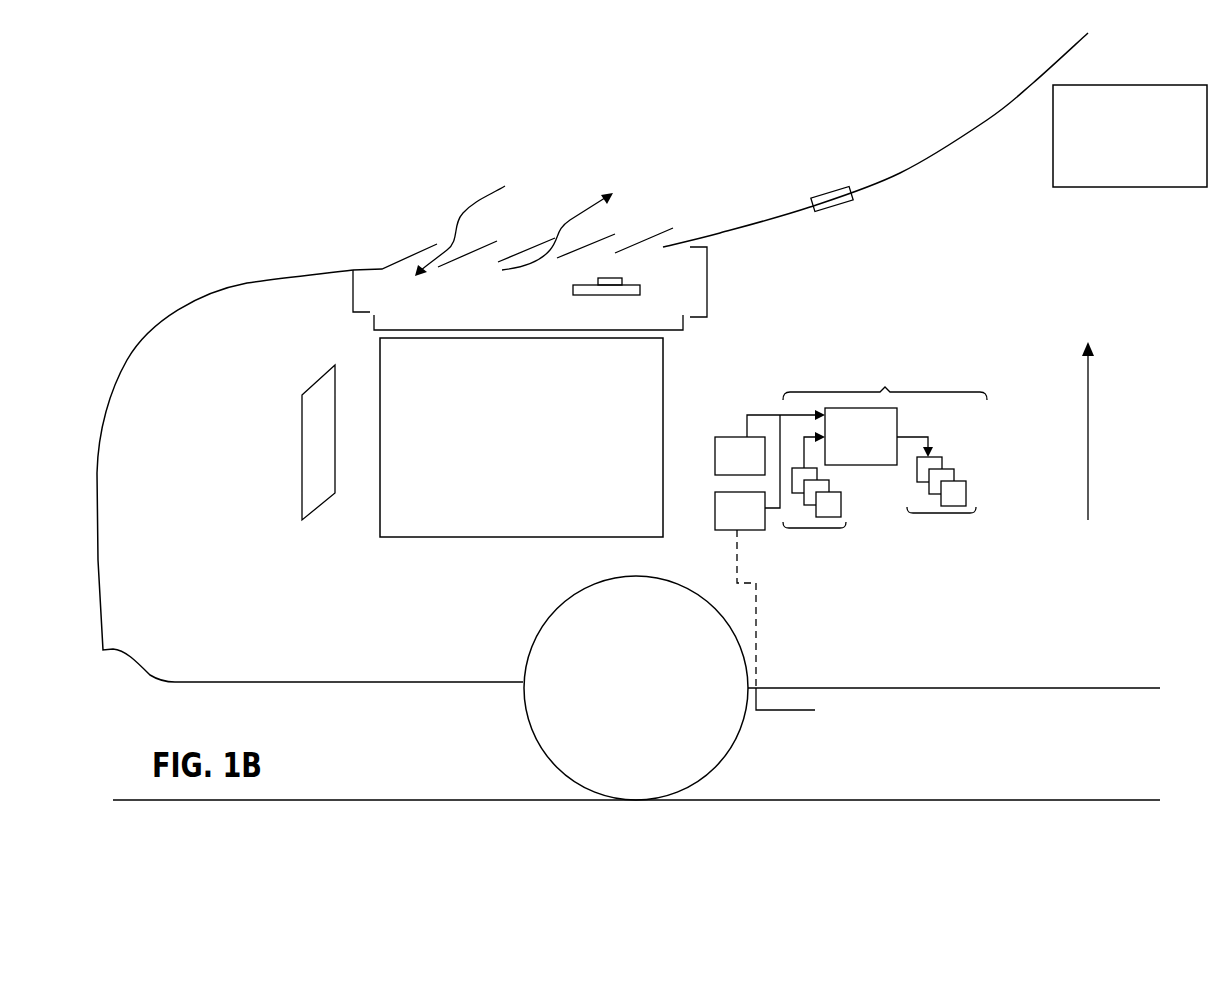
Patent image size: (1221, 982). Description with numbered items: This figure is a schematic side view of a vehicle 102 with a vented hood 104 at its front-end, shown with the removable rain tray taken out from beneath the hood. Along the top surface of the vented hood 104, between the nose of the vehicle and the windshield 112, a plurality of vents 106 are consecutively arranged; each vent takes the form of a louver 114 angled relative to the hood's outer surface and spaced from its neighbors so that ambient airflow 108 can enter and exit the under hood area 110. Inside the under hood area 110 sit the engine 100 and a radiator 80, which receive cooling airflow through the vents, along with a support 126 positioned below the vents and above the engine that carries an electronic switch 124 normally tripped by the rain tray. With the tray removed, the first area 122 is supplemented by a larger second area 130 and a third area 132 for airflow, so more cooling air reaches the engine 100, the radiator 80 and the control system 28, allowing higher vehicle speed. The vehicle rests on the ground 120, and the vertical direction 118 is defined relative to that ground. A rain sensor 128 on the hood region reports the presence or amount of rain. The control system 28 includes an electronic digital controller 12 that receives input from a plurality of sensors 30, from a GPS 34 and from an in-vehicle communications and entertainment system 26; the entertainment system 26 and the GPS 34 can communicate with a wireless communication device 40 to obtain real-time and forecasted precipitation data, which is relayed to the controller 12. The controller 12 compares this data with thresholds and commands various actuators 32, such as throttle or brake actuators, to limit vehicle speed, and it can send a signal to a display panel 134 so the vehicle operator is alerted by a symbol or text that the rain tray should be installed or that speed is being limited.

The controller 12 is at (861, 436).
The in-vehicle communications and entertainment system 26 is at (747, 472).
The control system 28 is at (886, 389).
The sensors 30 is at (817, 504).
The actuators 32 is at (943, 499).
The GPS 34 is at (770, 442).
The wireless communication device 40 is at (797, 710).
The radiator 80 is at (320, 510).
The engine 100 is at (380, 358).
The vehicle 102 is at (800, 131).
The vented hood 104 is at (370, 268).
The vents 106 is at (536, 196).
The airflow 108 is at (463, 213).
The under hood area 110 is at (205, 318).
The windshield 112 is at (987, 120).
The louver 114 is at (643, 240).
The vertical direction 118 is at (1088, 435).
The ground 120 is at (877, 800).
The first area 122 is at (353, 293).
The switch 124 is at (640, 285).
The support 126 is at (593, 297).
The rain sensor 128 is at (828, 188).
The second area 130 is at (675, 330).
The third area 132 is at (707, 292).
The display panel 134 is at (1135, 187).